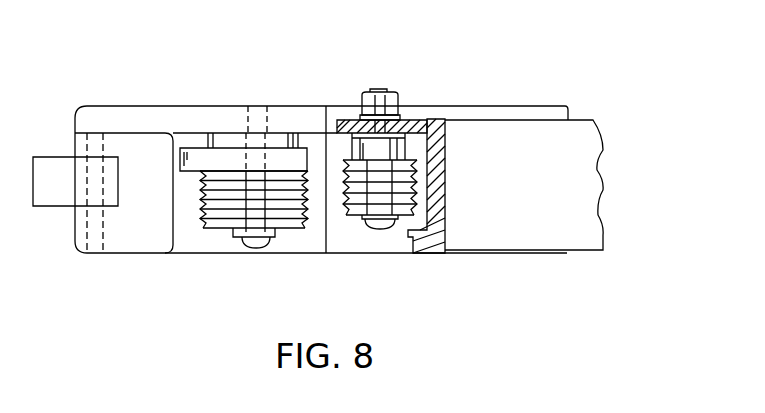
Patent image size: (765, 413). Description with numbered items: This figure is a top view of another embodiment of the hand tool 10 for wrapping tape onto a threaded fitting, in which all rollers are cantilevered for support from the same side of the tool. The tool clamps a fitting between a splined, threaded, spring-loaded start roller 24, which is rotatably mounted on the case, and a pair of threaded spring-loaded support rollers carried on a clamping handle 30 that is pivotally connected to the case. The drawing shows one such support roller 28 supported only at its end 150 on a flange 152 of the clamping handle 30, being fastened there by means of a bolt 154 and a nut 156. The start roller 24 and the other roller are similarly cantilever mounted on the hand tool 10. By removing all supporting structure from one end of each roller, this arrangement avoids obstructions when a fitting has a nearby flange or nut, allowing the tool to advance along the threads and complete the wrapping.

The hand tool 10 is at (110, 260).
The start roller 24 is at (222, 226).
The support roller 28 is at (349, 220).
The clamping handle 30 is at (565, 232).
The end 150 is at (428, 125).
The flange 152 is at (350, 118).
The bolt 154 is at (388, 226).
The nut 156 is at (398, 100).